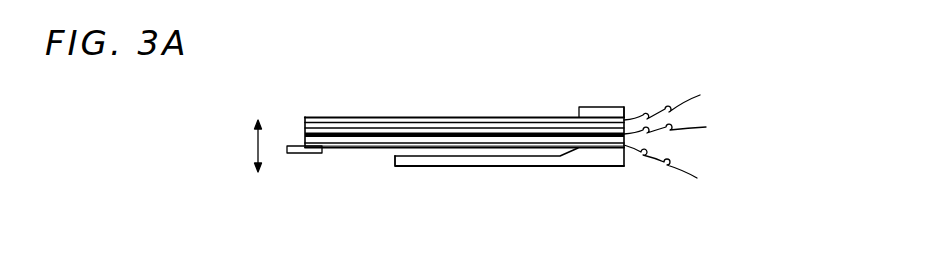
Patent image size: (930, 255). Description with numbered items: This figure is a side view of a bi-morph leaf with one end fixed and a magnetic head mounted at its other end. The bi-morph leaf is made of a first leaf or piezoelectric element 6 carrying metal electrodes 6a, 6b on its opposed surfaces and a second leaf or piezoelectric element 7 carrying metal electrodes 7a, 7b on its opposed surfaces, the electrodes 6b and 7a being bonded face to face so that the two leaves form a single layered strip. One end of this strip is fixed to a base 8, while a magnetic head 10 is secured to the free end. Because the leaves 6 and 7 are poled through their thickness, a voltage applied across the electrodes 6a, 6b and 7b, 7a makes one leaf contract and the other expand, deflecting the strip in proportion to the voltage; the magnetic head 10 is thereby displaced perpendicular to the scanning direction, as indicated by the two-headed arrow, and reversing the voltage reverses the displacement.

The first leaf or piezoelectric element 6 is at (436, 119).
The metal electrode 6a is at (387, 122).
The metal electrode 6b is at (336, 126).
The second leaf or piezoelectric element 7 is at (433, 144).
The metal electrode 7a is at (369, 148).
The metal electrode 7b is at (340, 148).
The base 8 is at (585, 167).
The magnetic head 10 is at (294, 153).